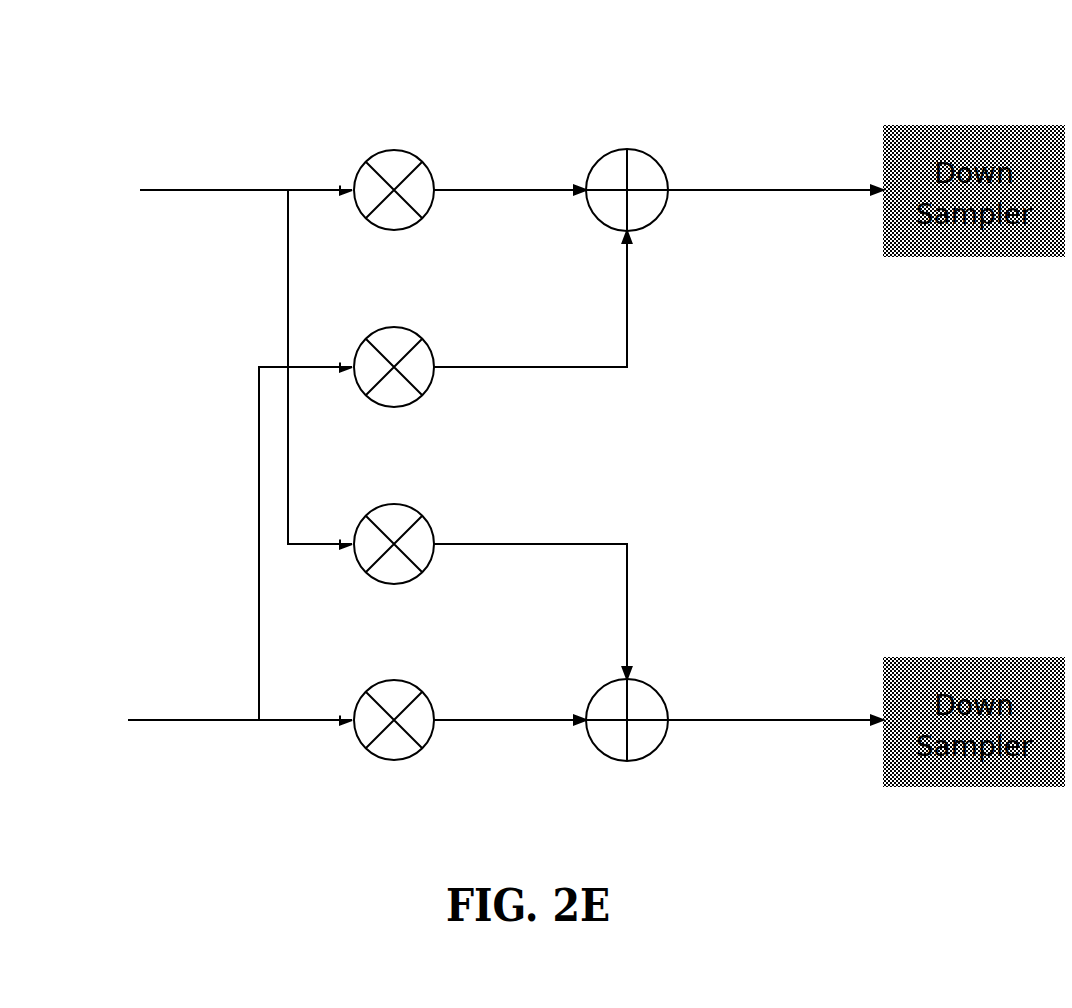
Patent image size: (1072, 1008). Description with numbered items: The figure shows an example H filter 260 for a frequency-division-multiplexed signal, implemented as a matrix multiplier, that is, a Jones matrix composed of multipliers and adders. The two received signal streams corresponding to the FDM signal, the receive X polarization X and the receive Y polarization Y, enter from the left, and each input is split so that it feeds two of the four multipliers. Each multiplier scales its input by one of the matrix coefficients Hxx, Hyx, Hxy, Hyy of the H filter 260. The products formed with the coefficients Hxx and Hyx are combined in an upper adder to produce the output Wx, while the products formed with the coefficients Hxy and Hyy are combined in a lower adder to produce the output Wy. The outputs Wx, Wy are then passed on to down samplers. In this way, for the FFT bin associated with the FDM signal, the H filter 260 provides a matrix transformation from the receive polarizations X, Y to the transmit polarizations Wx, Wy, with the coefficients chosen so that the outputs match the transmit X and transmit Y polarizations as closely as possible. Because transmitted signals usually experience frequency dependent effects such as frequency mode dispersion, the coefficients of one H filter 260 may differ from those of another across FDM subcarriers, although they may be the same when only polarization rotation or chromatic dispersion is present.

The H filter 260 is at (680, 68).
The receive X polarization X is at (211, 362).
The receive Y polarization Y is at (212, 547).
The coefficient Hxx is at (394, 150).
The coefficient Hyx is at (394, 327).
The coefficient Hxy is at (394, 504).
The coefficient Hyy is at (394, 680).
The output Wx is at (775, 166).
The output Wy is at (775, 697).